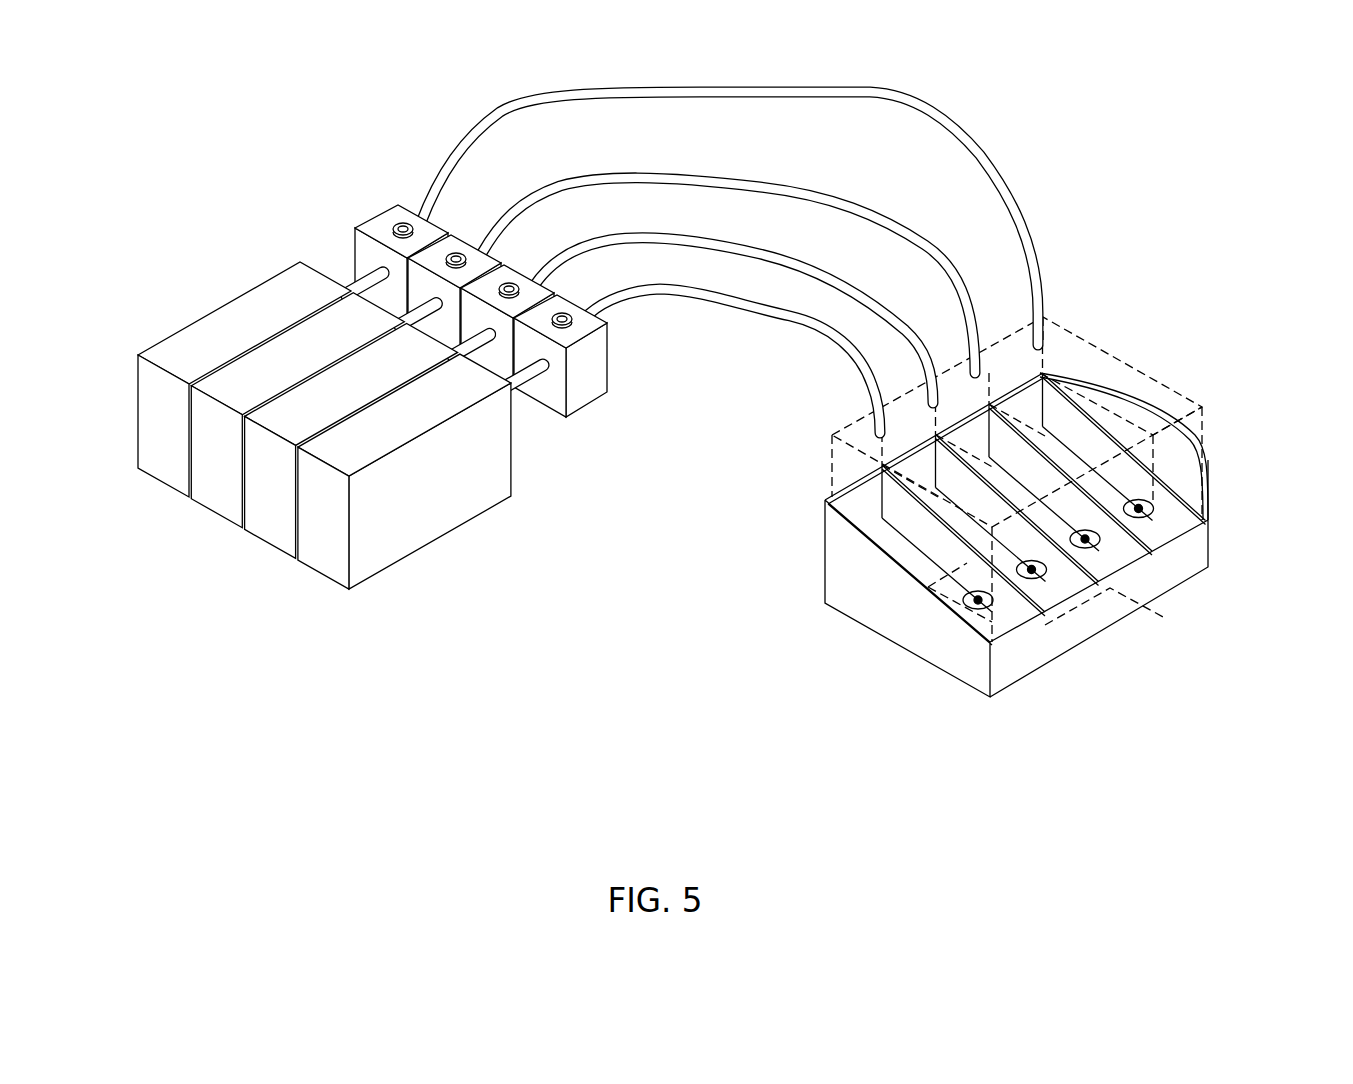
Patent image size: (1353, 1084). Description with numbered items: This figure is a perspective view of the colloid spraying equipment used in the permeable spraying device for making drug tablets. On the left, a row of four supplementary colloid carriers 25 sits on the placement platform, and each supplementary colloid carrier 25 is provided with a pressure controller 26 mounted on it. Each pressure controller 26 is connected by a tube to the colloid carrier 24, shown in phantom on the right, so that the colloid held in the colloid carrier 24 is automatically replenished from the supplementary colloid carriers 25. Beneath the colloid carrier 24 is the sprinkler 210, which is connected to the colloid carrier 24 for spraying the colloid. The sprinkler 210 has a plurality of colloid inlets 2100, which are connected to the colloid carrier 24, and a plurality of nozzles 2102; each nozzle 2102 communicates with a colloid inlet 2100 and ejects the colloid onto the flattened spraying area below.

The colloid carrier 24 is at (1120, 358).
The supplementary colloid carrier 25 is at (168, 458).
The pressure controller 26 is at (383, 222).
The sprinkler 210 is at (858, 605).
The colloid inlet 2100 is at (952, 607).
The nozzle 2102 is at (1030, 613).